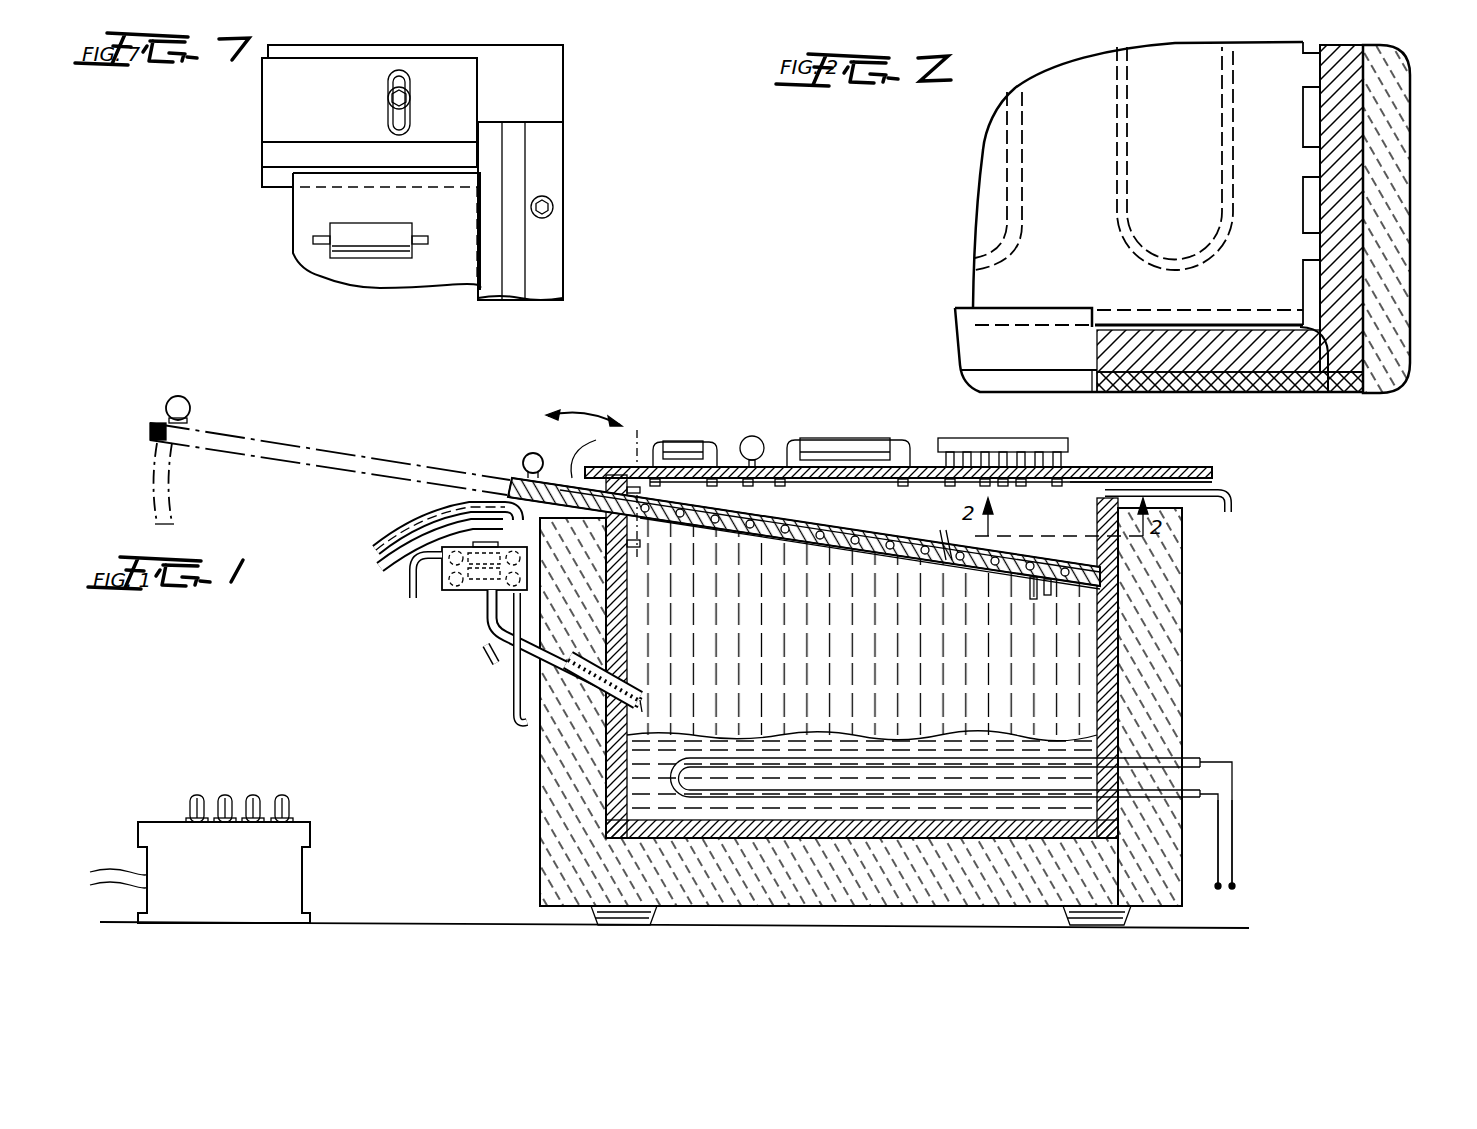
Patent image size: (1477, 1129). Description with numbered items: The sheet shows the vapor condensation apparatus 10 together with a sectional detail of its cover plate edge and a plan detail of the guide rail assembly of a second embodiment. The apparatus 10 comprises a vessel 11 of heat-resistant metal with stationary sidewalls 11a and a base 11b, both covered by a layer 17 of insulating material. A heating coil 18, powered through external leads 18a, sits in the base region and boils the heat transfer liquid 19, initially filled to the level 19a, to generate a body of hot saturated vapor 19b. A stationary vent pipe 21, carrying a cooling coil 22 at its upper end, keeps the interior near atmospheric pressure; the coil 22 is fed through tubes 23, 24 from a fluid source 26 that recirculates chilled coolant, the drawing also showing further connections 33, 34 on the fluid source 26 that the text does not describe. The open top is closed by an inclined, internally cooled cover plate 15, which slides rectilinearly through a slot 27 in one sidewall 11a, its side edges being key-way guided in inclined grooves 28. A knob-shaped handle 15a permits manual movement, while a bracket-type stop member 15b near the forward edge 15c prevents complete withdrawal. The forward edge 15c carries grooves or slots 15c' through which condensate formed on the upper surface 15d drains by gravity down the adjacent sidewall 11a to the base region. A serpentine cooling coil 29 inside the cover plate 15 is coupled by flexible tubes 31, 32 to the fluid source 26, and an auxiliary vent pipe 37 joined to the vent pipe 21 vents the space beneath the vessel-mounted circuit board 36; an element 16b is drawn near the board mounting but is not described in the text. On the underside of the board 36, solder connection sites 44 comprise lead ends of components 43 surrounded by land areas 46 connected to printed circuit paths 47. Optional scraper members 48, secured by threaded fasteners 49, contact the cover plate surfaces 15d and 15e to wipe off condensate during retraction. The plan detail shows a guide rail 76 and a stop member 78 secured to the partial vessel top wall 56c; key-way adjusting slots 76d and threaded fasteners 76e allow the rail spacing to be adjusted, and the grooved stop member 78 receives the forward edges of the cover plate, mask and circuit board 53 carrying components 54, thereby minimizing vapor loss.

In FIG. 1, the vapor condensation apparatus 10 is at (1242, 560).
In FIG. 1, the vessel 11 is at (1128, 627).
In FIG. 2, the sidewalls 11a is at (1343, 272).
In FIG. 1, the sidewalls 11a is at (1150, 666).
In FIG. 1, the base 11b is at (708, 843).
In FIG. 1, the cover plate 15 is at (265, 438).
In FIG. 1, the knob-shaped handle 15a is at (533, 457).
In FIG. 1, the stop member 15b is at (1032, 592).
In FIG. 2, the forward edge 15c is at (1361, 208).
In FIG. 1, the forward edge 15c is at (1089, 668).
In FIG. 2, the grooves or slots 15c' is at (1356, 192).
In FIG. 1, the upper surface 15d is at (806, 528).
In FIG. 1, the cover plate surface 15e is at (815, 545).
In FIG. 1, the plate flange 16b is at (1079, 488).
In FIG. 2, the layer of heat insulating material 17 is at (1395, 343).
In FIG. 1, the layer of heat insulating material 17 is at (565, 833).
In FIG. 1, the heating element or coil 18 is at (1195, 760).
In FIG. 1, the external leads 18a is at (1220, 822).
In FIG. 1, the heat transfer liquid 19 is at (632, 760).
In FIG. 1, the liquid level 19a is at (1030, 735).
In FIG. 1, the body of hot saturated vapor 19b is at (635, 614).
In FIG. 1, the stationary vent pipe 21 is at (513, 660).
In FIG. 1, the cooling coil 22 is at (455, 592).
In FIG. 1, the tube 23 is at (486, 657).
In FIG. 1, the tube 24 is at (412, 600).
In FIG. 1, the fluid source 26 is at (302, 868).
In FIG. 1, the slot 27 is at (578, 478).
In FIG. 2, the inclined grooves 28 is at (1327, 357).
In FIG. 2, the cooling coil 29 is at (1117, 230).
In FIG. 1, the cooling coil 29 is at (940, 535).
In FIG. 1, the flexible conduit or tube 31 is at (400, 522).
In FIG. 1, the flexible conduit or tube 32 is at (390, 570).
In FIG. 1, the hose connector 33 is at (253, 793).
In FIG. 1, the hose connector 34 is at (283, 793).
In FIG. 1, the circuit board 36 is at (1098, 470).
In FIG. 1, the auxiliary vent pipe 37 is at (513, 690).
In FIG. 1, the leaded electrical components 43 is at (985, 440).
In FIG. 1, the solder connection sites 44 is at (780, 488).
In FIG. 1, the land areas or pads 46 is at (708, 478).
In FIG. 1, the printed circuit paths 47 is at (745, 487).
In FIG. 1, the scraper members 48 is at (662, 580).
In FIG. 1, the threaded fasteners 49 is at (642, 543).
In FIG. 7, the circuit board 53 is at (440, 265).
In FIG. 7, the components 54 is at (370, 262).
In FIG. 7, the partial vessel top wall 56c is at (545, 90).
In FIG. 7, the guide rail 76 is at (285, 108).
In FIG. 7, the key-way adjusting slots 76d is at (388, 80).
In FIG. 7, the threaded fasteners 76e is at (408, 100).
In FIG. 7, the stop member 78 is at (545, 163).